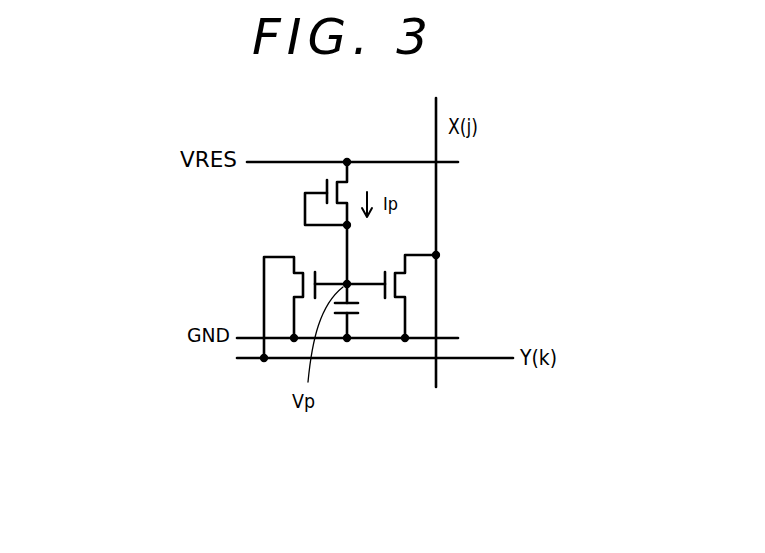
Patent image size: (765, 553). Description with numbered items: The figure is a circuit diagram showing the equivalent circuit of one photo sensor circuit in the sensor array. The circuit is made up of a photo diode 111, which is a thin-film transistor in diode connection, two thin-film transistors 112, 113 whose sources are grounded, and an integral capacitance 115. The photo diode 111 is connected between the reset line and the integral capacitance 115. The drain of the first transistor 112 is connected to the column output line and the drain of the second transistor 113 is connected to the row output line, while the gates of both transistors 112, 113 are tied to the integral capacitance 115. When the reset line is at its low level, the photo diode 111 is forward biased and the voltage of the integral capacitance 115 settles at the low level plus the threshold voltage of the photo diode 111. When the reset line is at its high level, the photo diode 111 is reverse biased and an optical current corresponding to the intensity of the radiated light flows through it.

The photo diode 111 is at (353, 188).
The TFT 112 is at (298, 286).
The TFT 113 is at (403, 282).
The integral capacitance 115 is at (360, 310).